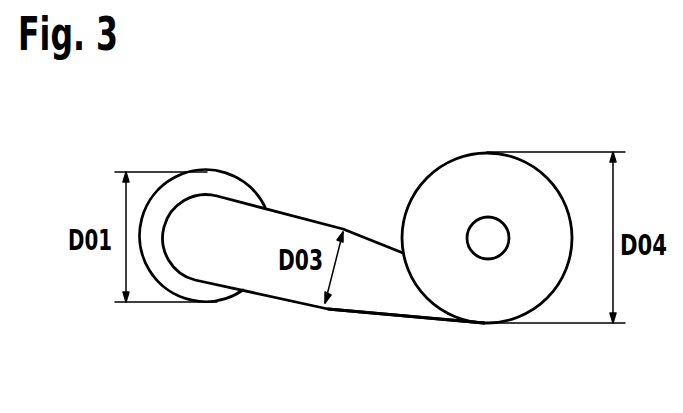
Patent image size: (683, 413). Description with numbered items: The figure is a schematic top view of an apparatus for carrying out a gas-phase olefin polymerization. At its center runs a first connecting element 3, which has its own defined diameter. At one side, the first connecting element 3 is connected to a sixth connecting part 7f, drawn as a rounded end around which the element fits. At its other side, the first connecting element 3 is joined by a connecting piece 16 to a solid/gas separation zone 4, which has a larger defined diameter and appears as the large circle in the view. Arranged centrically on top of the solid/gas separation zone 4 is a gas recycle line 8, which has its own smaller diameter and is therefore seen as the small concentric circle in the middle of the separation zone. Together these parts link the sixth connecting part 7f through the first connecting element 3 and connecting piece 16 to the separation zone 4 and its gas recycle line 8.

The sixth connecting part 7f is at (213, 182).
The first connecting element 3 is at (330, 227).
The connecting piece 16 is at (387, 316).
The solid/gas separation zone 4 is at (484, 167).
The gas recycle line 8 is at (485, 230).